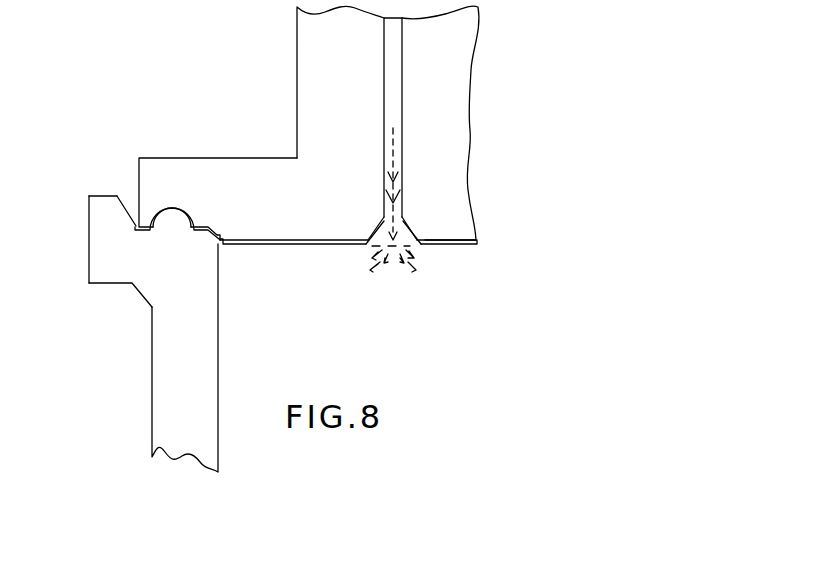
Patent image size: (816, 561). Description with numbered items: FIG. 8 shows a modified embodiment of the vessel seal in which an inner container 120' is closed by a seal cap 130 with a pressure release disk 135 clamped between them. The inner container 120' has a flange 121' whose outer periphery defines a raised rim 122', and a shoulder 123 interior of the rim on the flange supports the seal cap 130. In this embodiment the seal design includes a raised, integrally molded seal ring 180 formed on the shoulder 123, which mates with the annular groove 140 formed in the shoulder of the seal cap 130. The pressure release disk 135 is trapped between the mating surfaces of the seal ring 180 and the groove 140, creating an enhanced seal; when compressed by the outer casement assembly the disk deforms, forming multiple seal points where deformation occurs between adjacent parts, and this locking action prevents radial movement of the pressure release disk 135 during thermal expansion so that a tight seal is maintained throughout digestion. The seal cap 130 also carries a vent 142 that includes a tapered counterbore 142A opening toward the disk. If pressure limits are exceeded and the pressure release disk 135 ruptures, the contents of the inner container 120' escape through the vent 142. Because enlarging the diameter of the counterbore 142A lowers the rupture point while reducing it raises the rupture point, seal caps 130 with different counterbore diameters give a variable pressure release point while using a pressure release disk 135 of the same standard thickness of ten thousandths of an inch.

The inner container 120' is at (153, 334).
The flange 121' is at (78, 217).
The raised rim 122' is at (93, 186).
The shoulder 123 is at (150, 225).
The seal cap 130 is at (320, 42).
The pressure release disk 135 is at (462, 247).
The annular groove 140 is at (191, 218).
The vent 142 is at (402, 117).
The tapered counterbore 142A is at (430, 207).
The seal ring 180 is at (170, 215).